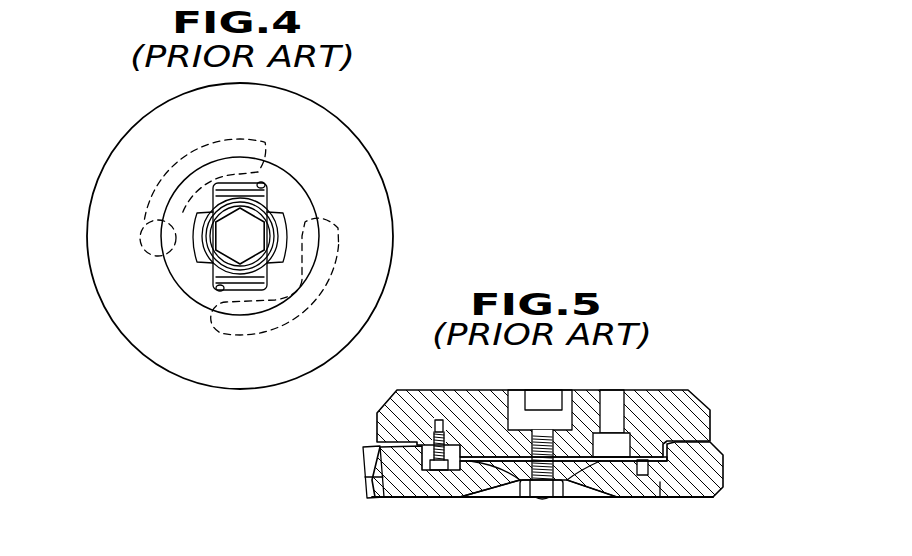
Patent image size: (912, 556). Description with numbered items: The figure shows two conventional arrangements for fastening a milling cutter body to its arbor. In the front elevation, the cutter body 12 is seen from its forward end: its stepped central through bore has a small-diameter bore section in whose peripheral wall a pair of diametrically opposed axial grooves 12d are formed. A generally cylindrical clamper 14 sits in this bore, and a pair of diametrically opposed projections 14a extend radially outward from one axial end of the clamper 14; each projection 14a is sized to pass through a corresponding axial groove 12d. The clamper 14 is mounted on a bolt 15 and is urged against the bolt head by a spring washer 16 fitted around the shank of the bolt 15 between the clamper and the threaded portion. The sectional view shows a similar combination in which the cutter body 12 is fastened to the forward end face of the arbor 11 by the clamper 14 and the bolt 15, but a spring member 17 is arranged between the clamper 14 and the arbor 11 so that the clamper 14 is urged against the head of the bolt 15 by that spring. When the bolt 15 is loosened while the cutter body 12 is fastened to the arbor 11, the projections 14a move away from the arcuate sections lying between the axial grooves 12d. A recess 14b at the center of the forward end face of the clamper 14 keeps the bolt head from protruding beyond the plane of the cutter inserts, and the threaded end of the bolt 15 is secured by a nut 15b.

In FIG. 5, the arbor 11 is at (688, 386).
In FIG. 5, the cutter body 12 is at (721, 437).
In FIG. 4, the axial grooves 12d is at (265, 184).
In FIG. 4, the clamper 14 is at (272, 196).
In FIG. 5, the clamper 14 is at (502, 491).
In FIG. 4, the projections 14a is at (284, 218).
In FIG. 5, the projections 14a is at (661, 498).
In FIG. 5, the recess 14b is at (593, 496).
In FIG. 4, the bolt 15 is at (207, 249).
In FIG. 5, the bolt 15 is at (540, 504).
In FIG. 5, the nut 15b is at (567, 496).
In FIG. 5, the spring washer 16 is at (439, 445).
In FIG. 5, the spring member 17 is at (470, 496).